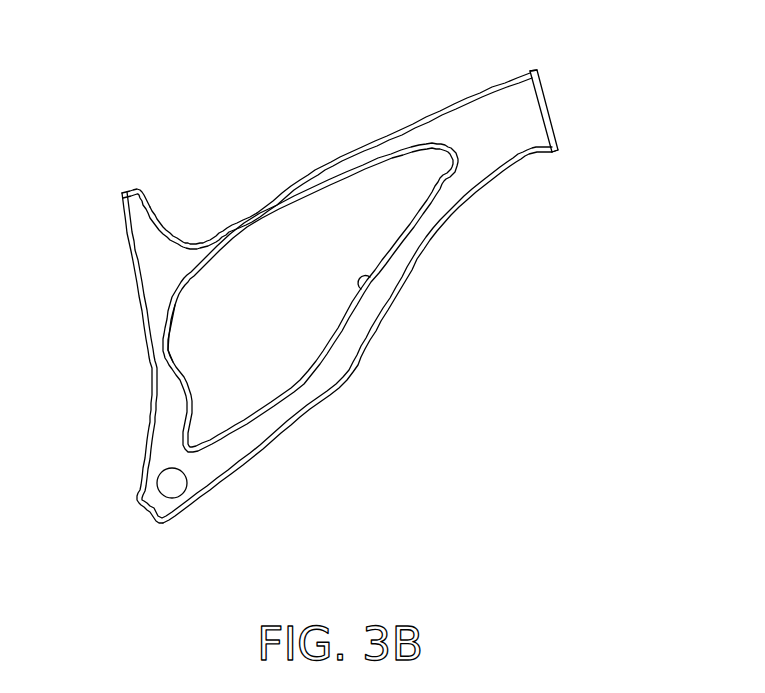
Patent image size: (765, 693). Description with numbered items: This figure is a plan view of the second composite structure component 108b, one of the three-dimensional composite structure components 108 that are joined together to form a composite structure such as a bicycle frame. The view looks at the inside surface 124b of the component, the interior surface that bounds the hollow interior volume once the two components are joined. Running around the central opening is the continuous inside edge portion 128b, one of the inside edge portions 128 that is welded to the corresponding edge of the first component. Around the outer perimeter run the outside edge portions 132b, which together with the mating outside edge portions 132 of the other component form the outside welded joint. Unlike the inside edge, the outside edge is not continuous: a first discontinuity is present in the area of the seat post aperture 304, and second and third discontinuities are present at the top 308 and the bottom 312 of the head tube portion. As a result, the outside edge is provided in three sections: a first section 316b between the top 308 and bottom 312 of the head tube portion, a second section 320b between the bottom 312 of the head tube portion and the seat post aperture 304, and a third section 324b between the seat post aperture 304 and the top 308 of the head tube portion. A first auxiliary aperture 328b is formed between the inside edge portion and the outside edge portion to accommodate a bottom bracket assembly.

The outside edge portions 132 is at (348, 278).
The outside edge portions of the second composite structure component 132b is at (570, 70).
The composite structure components 108 is at (135, 220).
The second composite structure component 108b is at (460, 120).
The inside surface 124b is at (258, 223).
The inside edge portions 128 is at (172, 332).
The inside edge portions of the second composite structure component 128b is at (364, 289).
The seat post aperture 304 is at (122, 193).
The top of head tube portion 308 is at (523, 70).
The bottom of head tube portion 312 is at (547, 157).
The first section of outside edge portion 316b is at (548, 115).
The second section of outside edge portion 320b is at (313, 417).
The third section of outside edge portion 324b is at (207, 237).
The first auxiliary aperture 328b is at (157, 483).